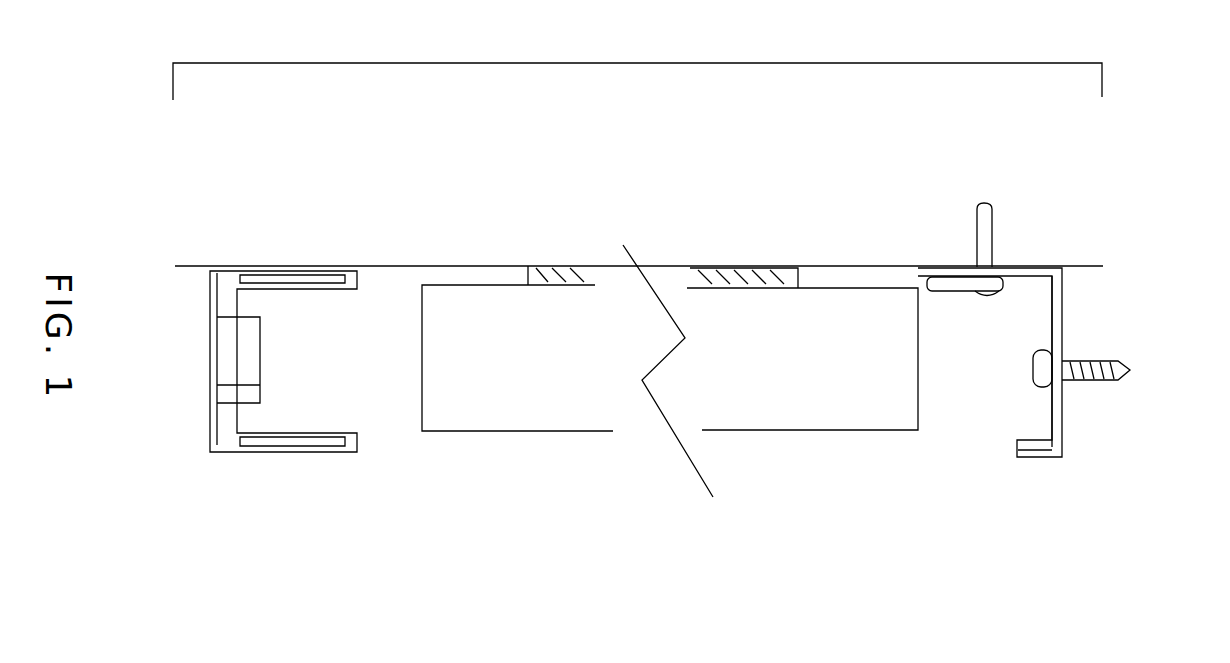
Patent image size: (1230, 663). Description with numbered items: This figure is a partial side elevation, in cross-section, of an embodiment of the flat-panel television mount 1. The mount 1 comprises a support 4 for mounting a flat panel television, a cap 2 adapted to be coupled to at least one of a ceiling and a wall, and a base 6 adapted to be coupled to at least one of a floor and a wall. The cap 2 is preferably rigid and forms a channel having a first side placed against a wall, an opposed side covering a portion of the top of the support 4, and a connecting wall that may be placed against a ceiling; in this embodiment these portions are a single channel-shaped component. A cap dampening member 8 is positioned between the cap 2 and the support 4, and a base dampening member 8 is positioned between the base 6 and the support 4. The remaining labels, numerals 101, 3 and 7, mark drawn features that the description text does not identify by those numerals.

The mounting assembly 101 is at (418, 262).
The flat-panel television mount 1 is at (788, 399).
The cap 2 is at (1062, 317).
The screw head 3 is at (1062, 378).
The support 4 is at (985, 222).
The base 6 is at (212, 418).
The clip 7 is at (972, 263).
The dampening member 8 is at (292, 283).